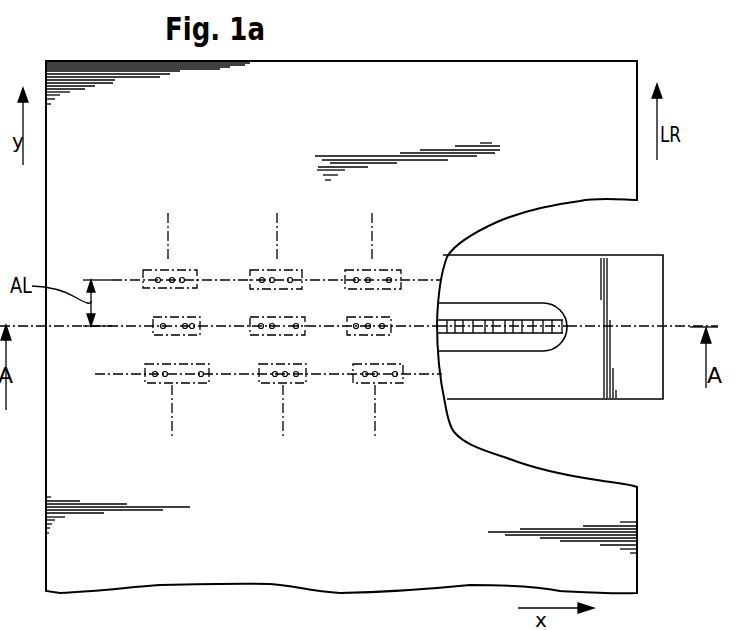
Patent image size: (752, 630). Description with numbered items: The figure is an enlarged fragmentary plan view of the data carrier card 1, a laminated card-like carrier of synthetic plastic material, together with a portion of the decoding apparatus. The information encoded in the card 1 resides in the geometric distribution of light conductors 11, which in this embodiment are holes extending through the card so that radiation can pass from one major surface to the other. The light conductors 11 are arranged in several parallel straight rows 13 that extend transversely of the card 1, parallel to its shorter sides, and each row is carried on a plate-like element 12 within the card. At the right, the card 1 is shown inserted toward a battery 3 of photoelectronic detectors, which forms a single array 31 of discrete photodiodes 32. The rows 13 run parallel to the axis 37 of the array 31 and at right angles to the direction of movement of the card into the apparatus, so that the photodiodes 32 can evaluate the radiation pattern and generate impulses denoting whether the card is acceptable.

The data carrier card 1 is at (568, 50).
The battery of detectors 3 is at (638, 243).
The light conductor 11 is at (184, 278).
The plate elements 12 is at (152, 270).
The row of light conductors 13 is at (110, 328).
The array of photodiodes 31 is at (492, 356).
The photodiode 32 is at (551, 337).
The axis of the array 37 is at (647, 327).